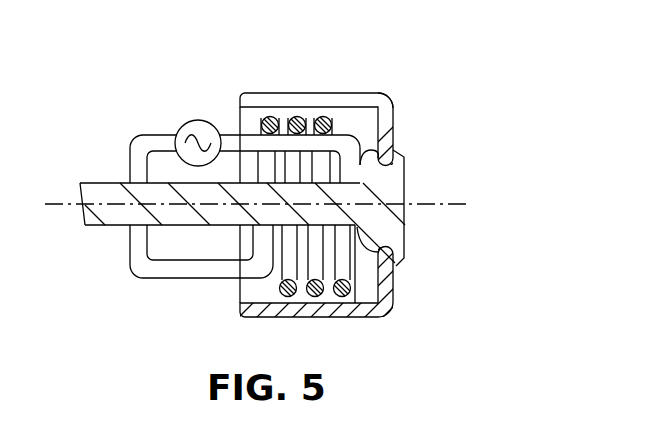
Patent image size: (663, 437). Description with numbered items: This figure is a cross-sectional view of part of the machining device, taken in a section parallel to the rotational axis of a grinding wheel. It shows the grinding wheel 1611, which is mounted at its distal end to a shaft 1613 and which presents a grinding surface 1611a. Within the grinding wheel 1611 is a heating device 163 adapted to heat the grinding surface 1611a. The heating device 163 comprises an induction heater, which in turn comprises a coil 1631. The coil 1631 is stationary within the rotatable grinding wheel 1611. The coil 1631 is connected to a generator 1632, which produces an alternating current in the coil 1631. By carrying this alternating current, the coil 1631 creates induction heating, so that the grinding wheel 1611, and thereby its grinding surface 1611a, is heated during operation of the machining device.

The heating device 163 is at (199, 290).
The coil 1631 is at (352, 278).
The generator 1632 is at (195, 111).
The grinding wheel 1611 is at (393, 99).
The grinding surface 1611a is at (387, 58).
The shaft 1613 is at (420, 190).